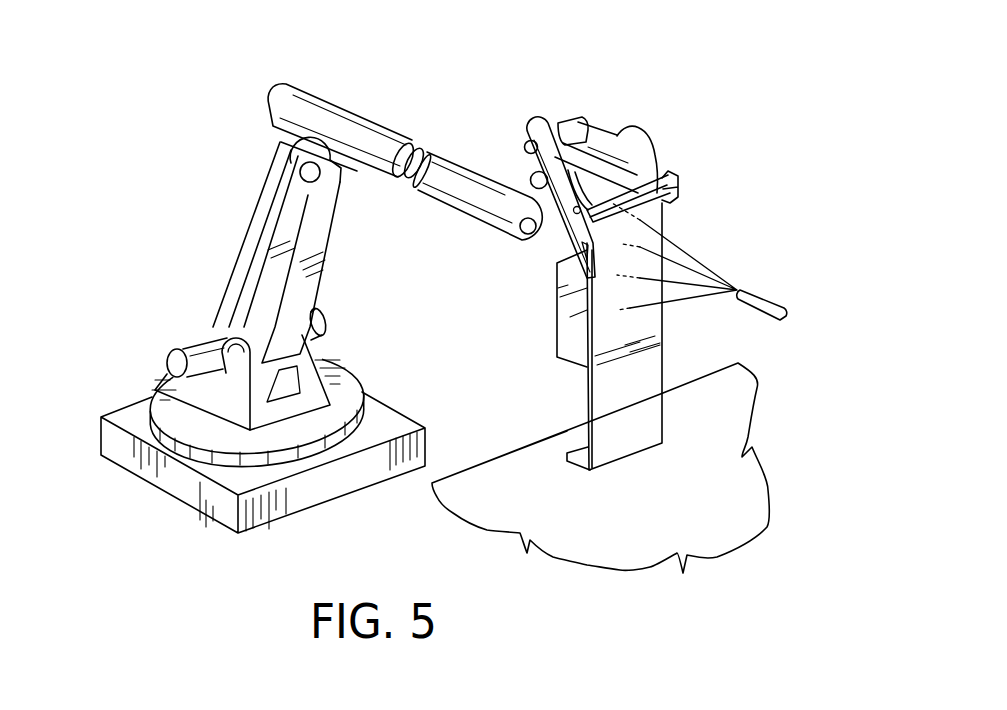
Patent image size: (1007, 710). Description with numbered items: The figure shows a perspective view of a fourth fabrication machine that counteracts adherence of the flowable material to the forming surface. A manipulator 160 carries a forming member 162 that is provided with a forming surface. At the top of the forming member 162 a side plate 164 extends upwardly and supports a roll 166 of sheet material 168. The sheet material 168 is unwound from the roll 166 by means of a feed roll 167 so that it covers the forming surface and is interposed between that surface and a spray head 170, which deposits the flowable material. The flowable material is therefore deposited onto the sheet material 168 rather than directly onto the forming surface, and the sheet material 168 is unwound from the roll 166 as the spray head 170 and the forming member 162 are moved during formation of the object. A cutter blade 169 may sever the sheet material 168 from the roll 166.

The manipulator 160 is at (228, 182).
The forming member 162 is at (567, 332).
The side plate 164 is at (563, 225).
The roll 166 is at (653, 90).
The feed roll 167 is at (641, 172).
The sheet material 168 is at (642, 420).
The cutter blade 169 is at (662, 215).
The spray head 170 is at (766, 299).